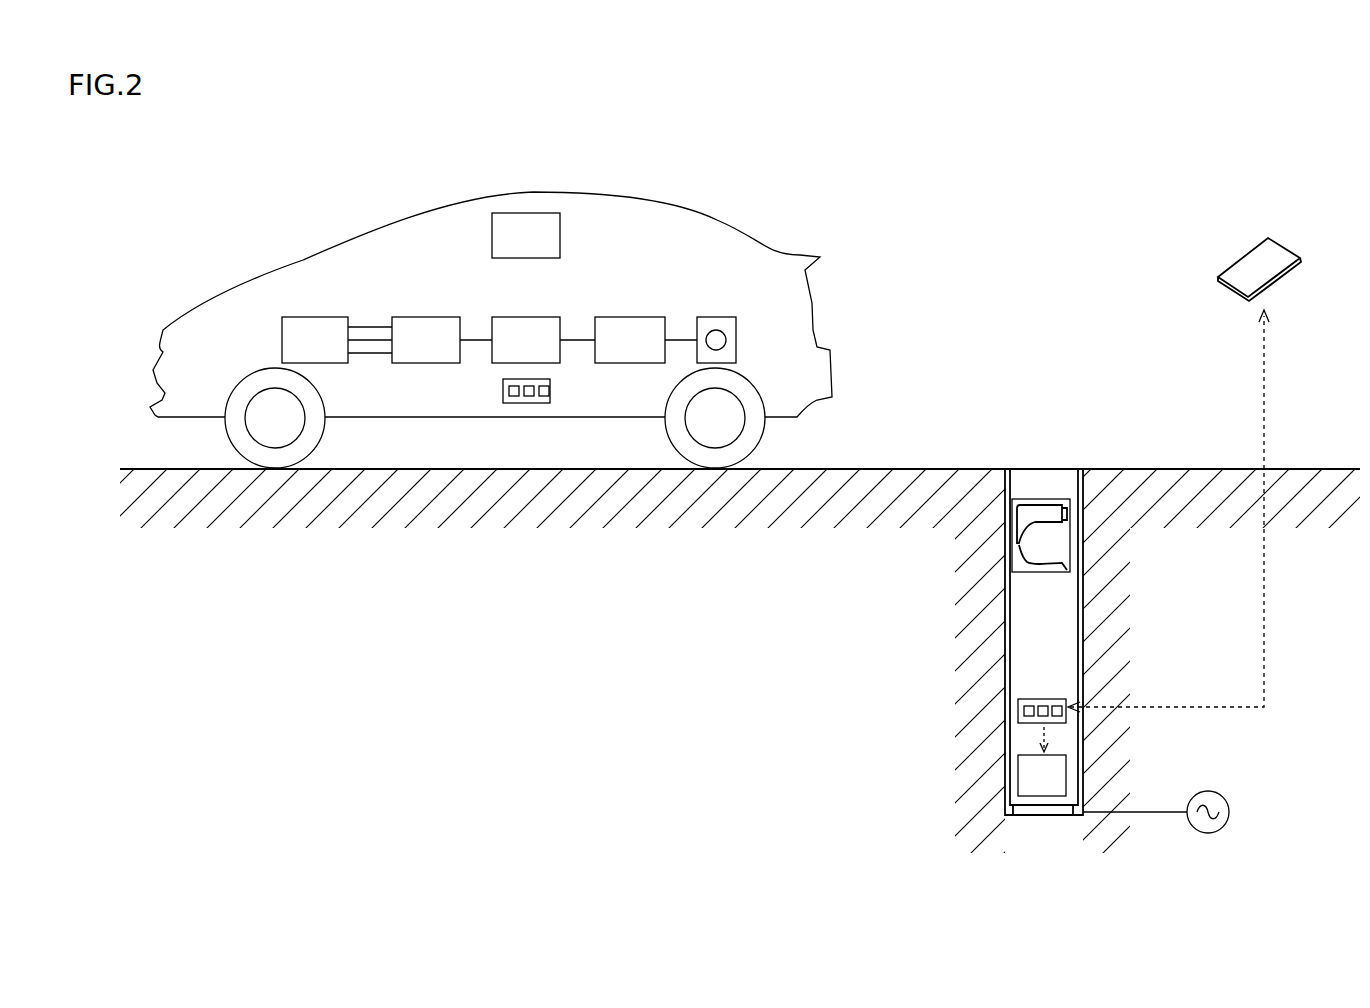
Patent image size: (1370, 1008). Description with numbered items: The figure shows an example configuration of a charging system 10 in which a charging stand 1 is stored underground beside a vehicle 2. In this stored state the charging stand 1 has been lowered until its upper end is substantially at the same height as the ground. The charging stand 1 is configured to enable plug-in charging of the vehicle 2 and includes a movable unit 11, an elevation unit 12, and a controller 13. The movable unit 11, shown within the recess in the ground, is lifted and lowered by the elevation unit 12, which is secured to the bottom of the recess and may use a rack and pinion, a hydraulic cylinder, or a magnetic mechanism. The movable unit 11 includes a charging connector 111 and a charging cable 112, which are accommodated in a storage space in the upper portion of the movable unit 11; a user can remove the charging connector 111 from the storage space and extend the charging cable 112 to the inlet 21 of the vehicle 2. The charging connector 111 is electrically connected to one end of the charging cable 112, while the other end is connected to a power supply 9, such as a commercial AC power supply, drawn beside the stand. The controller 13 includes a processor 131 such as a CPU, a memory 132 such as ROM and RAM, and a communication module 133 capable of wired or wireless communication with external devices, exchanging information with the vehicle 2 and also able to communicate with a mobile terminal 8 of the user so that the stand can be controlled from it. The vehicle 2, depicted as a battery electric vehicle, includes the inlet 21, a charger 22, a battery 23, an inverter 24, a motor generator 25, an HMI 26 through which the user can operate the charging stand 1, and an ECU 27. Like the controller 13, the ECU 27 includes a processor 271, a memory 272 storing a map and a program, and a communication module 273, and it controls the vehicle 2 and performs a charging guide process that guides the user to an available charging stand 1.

The charging system 10 is at (979, 178).
The charging stand 1 is at (1058, 412).
The movable unit 11 is at (1073, 470).
The charging connector 111 is at (1047, 522).
The charging cable 112 is at (1040, 566).
The elevation unit 12 is at (1066, 775).
The controller 13 is at (1043, 713).
The processor 131 is at (1028, 718).
The memory 132 is at (1042, 704).
The communication module 133 is at (1056, 704).
The vehicle 2 is at (714, 218).
The inlet 21 is at (715, 316).
The charger 22 is at (628, 316).
The battery 23 is at (525, 316).
The inverter 24 is at (425, 316).
The motor generator 25 is at (313, 316).
The HMI 26 is at (522, 212).
The ECU 27 is at (529, 424).
The processor 271 is at (513, 398).
The memory 272 is at (528, 399).
The communication module 273 is at (541, 398).
The mobile terminal 8 is at (1268, 236).
The power supply 9 is at (1223, 795).